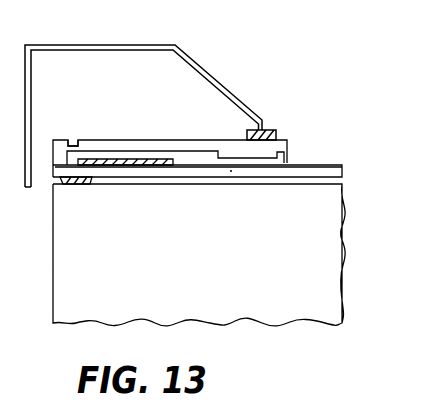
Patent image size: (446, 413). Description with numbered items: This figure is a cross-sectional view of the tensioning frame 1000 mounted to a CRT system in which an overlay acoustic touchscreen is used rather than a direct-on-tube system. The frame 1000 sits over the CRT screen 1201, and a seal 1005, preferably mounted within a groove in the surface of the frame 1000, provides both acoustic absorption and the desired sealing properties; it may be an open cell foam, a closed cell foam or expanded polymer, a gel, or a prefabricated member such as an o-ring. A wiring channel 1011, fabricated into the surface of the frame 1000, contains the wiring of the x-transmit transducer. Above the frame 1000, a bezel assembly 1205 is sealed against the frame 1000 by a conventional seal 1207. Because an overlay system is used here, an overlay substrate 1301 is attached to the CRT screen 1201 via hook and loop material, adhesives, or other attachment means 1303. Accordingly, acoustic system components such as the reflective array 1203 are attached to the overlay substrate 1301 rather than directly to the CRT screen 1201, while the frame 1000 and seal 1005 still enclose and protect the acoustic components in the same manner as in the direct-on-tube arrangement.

The frame 1000 is at (180, 147).
The seal 1005 is at (291, 160).
The wiring channel 1011 is at (73, 145).
The CRT screen 1201 is at (215, 291).
The acoustic reflective array 1203 is at (143, 166).
The bezel assembly 1205 is at (222, 77).
The seal 1207 is at (270, 127).
The overlay substrate 1301 is at (232, 170).
The attachment means 1303 is at (73, 185).